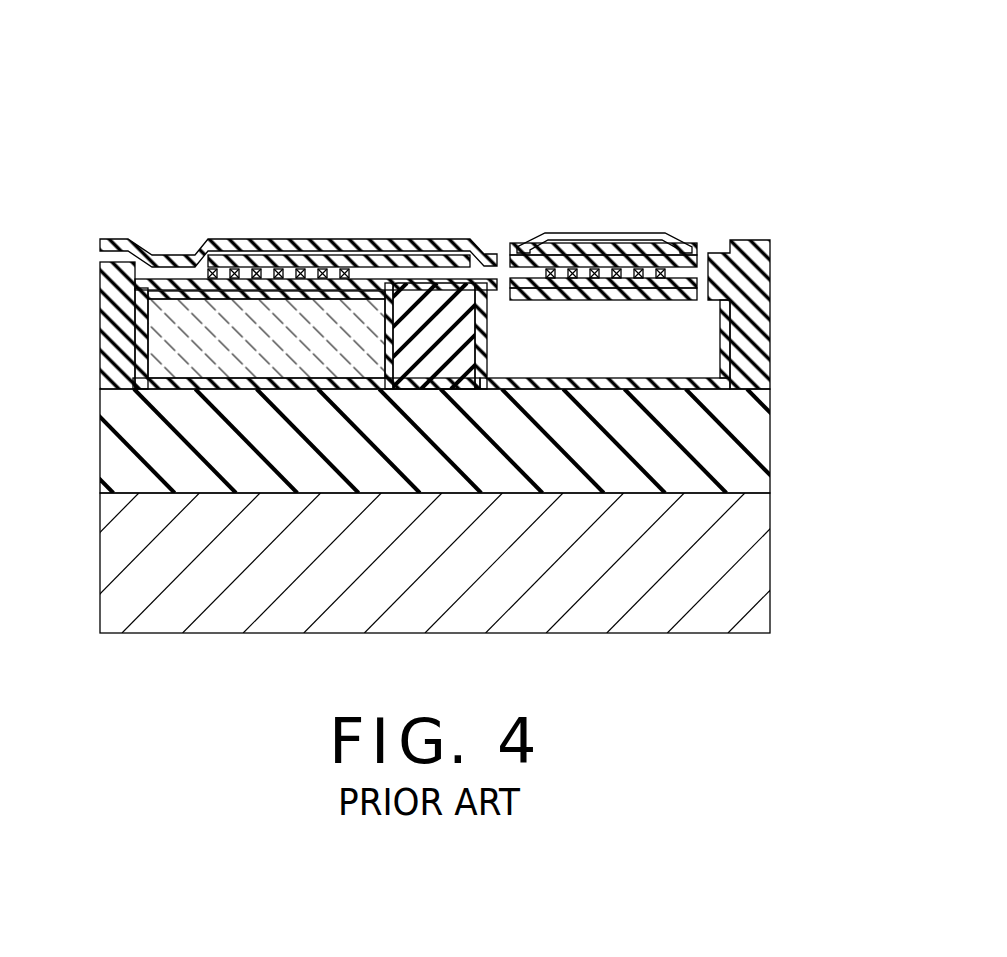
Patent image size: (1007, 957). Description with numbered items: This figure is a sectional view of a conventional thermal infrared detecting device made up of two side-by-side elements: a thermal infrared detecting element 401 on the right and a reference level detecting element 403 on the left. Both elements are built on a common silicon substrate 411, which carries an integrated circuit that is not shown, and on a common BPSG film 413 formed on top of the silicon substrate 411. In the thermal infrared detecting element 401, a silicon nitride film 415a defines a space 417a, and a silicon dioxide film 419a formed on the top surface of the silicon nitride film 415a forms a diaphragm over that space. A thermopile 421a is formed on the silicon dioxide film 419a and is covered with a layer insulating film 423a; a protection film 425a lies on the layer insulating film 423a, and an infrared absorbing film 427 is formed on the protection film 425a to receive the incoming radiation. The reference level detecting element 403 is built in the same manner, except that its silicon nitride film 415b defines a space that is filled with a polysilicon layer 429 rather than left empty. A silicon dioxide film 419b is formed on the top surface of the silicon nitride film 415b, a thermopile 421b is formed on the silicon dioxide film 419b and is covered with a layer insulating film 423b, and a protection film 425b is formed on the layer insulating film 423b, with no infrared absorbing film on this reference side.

The thermal infrared detecting element 401 is at (645, 204).
The reference level detecting element 403 is at (302, 223).
The silicon substrate 411 is at (760, 560).
The BPSG film 413 is at (760, 441).
The silicon nitride film 415a is at (724, 353).
The silicon nitride film 415b is at (388, 322).
The space 417a is at (768, 308).
The silicon dioxide film 419a is at (520, 256).
The silicon dioxide film 419b is at (160, 248).
The thermopile 421a is at (527, 283).
The thermopile 421b is at (215, 256).
The layer insulating film 423a is at (590, 260).
The layer insulating film 423b is at (252, 266).
The protection film 425a is at (643, 247).
The protection film 425b is at (334, 247).
The infrared absorbing film 427 is at (672, 233).
The polysilicon layer 429 is at (173, 337).